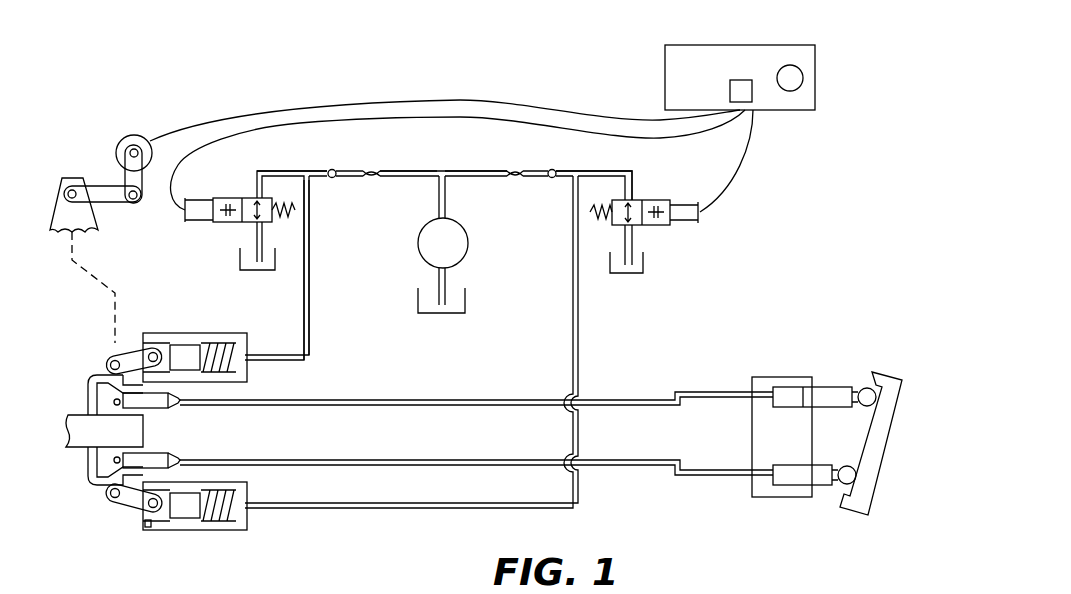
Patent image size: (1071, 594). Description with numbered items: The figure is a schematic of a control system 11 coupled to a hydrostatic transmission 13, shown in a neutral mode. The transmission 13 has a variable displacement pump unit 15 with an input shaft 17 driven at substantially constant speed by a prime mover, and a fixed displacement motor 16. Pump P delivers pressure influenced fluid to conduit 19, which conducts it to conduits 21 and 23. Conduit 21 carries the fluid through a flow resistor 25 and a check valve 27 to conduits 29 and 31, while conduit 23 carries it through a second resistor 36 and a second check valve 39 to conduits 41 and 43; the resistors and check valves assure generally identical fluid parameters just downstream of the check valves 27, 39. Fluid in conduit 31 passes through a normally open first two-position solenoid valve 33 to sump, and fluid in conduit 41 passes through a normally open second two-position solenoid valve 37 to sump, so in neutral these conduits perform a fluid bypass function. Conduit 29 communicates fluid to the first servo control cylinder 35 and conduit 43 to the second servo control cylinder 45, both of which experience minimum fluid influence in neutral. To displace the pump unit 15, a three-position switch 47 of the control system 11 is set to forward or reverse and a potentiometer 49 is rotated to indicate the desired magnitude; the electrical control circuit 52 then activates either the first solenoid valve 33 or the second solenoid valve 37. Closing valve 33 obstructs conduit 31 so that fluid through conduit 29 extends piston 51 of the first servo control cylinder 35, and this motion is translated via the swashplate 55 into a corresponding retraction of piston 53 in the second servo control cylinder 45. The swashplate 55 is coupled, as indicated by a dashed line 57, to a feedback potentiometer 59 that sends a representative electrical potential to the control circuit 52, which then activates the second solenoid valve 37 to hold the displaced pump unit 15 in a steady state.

The control system 11 is at (605, 67).
The hydrostatic transmission 13 is at (476, 370).
The variable displacement pump unit 15 is at (111, 450).
The fixed displacement motor 16 is at (802, 520).
The input shaft 17 is at (80, 418).
The conduit 19 is at (446, 200).
The conduit 21 is at (481, 166).
The conduit 23 is at (432, 166).
The flow resistor 25 is at (515, 170).
The check valve 27 is at (553, 178).
The conduit 29 is at (579, 322).
The conduit 31 is at (633, 193).
The first two-position solenoid valve 33 is at (661, 228).
The first servo control cylinder 35 is at (195, 535).
The second resistor 36 is at (378, 166).
The second two-position solenoid valve 37 is at (222, 224).
The second check valve 39 is at (332, 178).
The conduit 41 is at (281, 171).
The conduit 43 is at (311, 295).
The second servo control cylinder 45 is at (200, 337).
The three-position switch 47 is at (752, 100).
The potentiometer 49 is at (803, 77).
The piston 51 is at (148, 527).
The electrical control circuit 52 is at (745, 45).
The piston 53 is at (165, 345).
The swashplate 55 is at (97, 378).
The dashed line 57 is at (115, 293).
The feedback potentiometer 59 is at (128, 135).